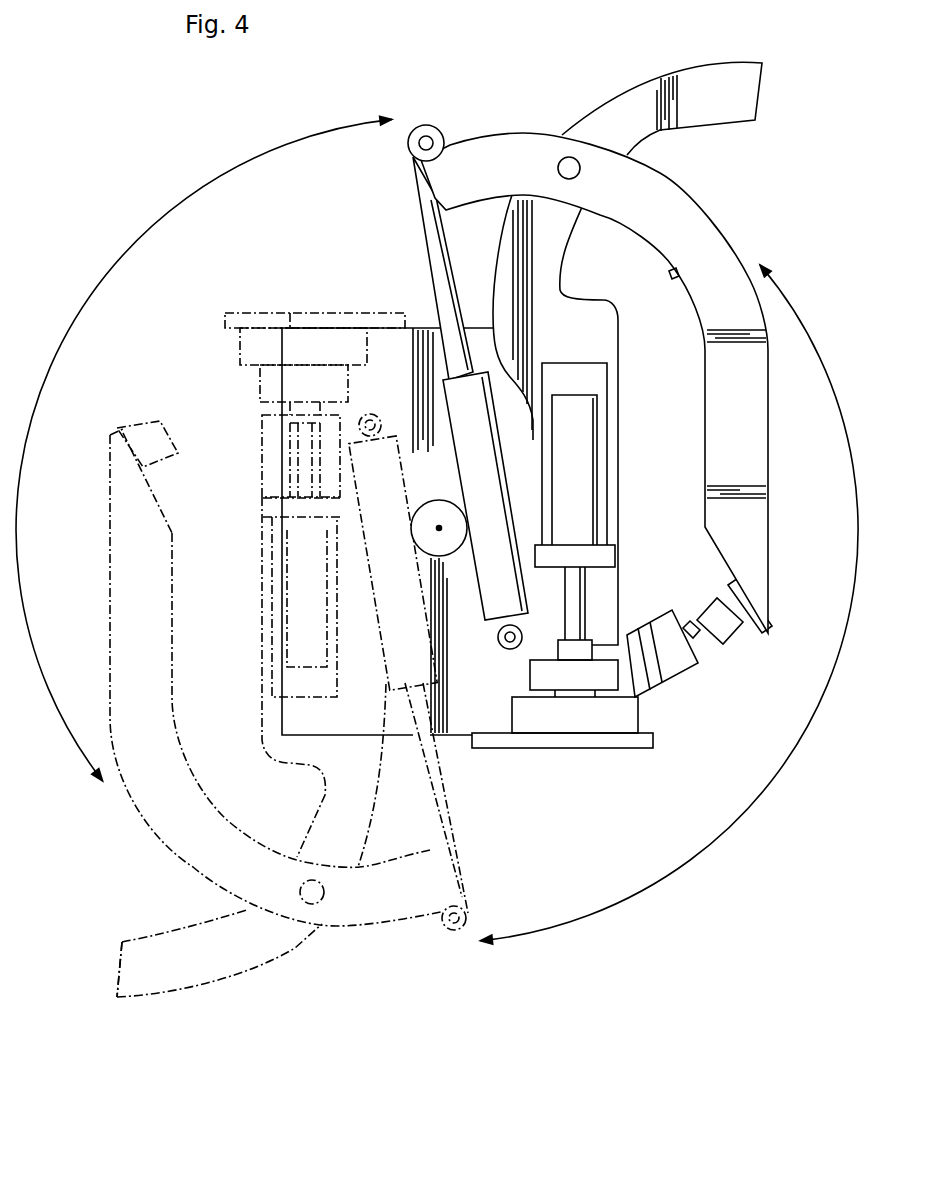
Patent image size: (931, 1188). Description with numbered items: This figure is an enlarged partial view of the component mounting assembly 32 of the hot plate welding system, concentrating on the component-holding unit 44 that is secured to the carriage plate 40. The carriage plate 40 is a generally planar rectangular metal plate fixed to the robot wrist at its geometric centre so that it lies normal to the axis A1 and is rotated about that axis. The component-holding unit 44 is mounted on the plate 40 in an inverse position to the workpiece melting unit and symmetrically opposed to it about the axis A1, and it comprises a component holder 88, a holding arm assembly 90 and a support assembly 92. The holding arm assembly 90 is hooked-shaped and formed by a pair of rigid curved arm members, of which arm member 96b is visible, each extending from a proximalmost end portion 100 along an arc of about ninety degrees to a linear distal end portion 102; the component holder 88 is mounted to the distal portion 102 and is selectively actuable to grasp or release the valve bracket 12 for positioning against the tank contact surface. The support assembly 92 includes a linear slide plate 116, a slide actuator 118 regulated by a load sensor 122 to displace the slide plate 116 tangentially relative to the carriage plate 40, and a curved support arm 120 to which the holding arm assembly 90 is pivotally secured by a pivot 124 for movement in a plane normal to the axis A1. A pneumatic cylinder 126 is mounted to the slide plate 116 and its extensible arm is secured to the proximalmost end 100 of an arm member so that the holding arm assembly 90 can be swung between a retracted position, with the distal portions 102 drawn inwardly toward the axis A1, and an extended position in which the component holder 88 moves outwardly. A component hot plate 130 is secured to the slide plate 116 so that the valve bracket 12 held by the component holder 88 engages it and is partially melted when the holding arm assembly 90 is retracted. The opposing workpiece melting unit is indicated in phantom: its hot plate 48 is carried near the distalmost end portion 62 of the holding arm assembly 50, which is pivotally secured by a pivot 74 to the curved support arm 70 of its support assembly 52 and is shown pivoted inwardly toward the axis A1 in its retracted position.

The component mounting assembly 32 is at (517, 52).
The carriage plate 40 is at (489, 685).
The component-holding unit 44 is at (604, 355).
The hot plate 48 is at (165, 428).
The holding arm assembly 50 is at (155, 625).
The support assembly 52 is at (242, 957).
The distalmost end portion 62 is at (158, 497).
The curved support arm 70 is at (127, 974).
The pivot 74 is at (306, 897).
The component holder 88 is at (733, 640).
The holding arm assembly 90 is at (663, 202).
The support assembly 92 is at (572, 318).
The arm member 96b is at (742, 527).
The proximalmost end portion 100 is at (409, 149).
The linear distal end portion 102 is at (718, 556).
The linear slide plate 116 is at (606, 447).
The slide actuator 118 is at (578, 486).
The curved support arm 120 is at (700, 88).
The load sensor 122 is at (580, 677).
The pivot 124 is at (567, 157).
The pneumatic cylinder 126 is at (435, 257).
The component hot plate 130 is at (672, 663).
The valve bracket 12 is at (688, 643).
The axis A1 is at (439, 523).